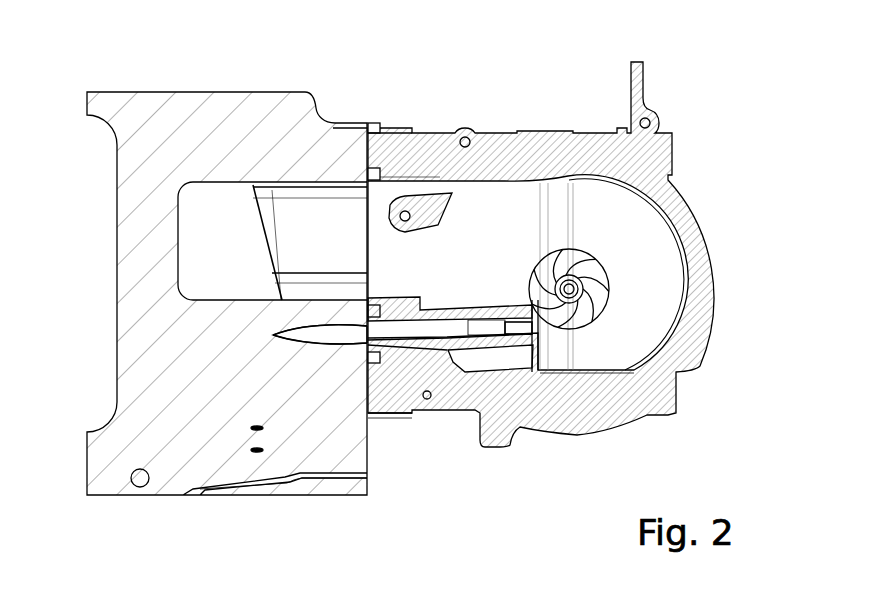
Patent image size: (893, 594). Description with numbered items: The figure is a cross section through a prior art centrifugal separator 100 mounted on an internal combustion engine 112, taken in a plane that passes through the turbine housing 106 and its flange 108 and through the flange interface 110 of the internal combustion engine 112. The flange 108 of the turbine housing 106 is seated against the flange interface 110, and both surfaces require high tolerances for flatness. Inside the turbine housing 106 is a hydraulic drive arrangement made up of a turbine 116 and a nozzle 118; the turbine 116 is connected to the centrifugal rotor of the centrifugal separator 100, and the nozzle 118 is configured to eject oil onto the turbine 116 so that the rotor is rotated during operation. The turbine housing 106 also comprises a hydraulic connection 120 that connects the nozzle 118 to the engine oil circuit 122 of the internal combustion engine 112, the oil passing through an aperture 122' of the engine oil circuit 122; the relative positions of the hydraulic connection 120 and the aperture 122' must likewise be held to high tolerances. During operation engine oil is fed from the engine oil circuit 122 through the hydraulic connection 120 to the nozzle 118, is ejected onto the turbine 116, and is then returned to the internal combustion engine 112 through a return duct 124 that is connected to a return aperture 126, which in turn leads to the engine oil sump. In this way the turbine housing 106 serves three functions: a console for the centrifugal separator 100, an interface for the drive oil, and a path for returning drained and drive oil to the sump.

The centrifugal separator 100 is at (569, 58).
The turbine housing 106 is at (657, 150).
The flange 108 is at (365, 152).
The flange interface 110 is at (368, 430).
The internal combustion engine 112 is at (132, 110).
The turbine 116 is at (592, 295).
The nozzle 118 is at (527, 325).
The hydraulic connection 120 is at (415, 333).
The engine oil circuit 122 is at (310, 187).
The aperture 122' is at (365, 187).
The return duct 124 is at (392, 257).
The return aperture 126 is at (273, 245).